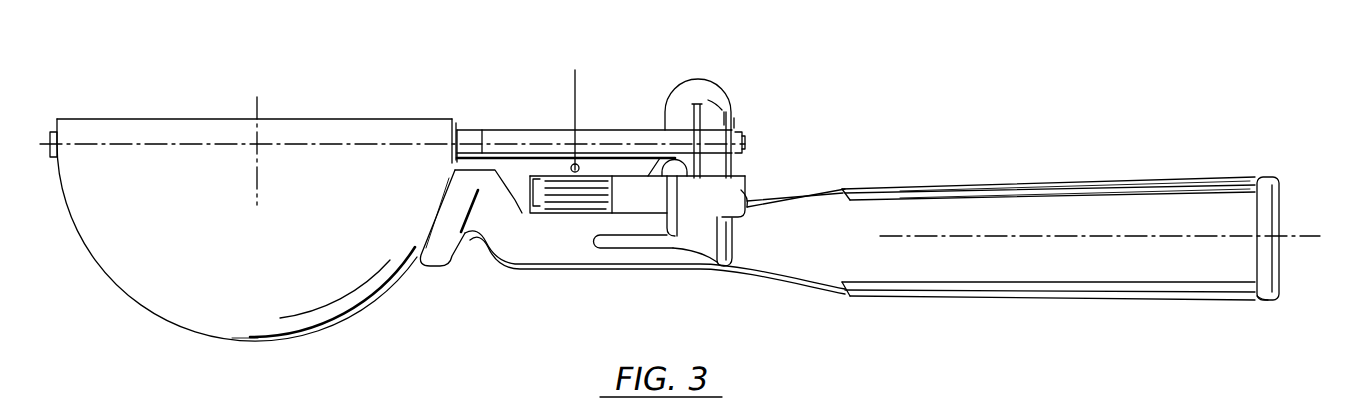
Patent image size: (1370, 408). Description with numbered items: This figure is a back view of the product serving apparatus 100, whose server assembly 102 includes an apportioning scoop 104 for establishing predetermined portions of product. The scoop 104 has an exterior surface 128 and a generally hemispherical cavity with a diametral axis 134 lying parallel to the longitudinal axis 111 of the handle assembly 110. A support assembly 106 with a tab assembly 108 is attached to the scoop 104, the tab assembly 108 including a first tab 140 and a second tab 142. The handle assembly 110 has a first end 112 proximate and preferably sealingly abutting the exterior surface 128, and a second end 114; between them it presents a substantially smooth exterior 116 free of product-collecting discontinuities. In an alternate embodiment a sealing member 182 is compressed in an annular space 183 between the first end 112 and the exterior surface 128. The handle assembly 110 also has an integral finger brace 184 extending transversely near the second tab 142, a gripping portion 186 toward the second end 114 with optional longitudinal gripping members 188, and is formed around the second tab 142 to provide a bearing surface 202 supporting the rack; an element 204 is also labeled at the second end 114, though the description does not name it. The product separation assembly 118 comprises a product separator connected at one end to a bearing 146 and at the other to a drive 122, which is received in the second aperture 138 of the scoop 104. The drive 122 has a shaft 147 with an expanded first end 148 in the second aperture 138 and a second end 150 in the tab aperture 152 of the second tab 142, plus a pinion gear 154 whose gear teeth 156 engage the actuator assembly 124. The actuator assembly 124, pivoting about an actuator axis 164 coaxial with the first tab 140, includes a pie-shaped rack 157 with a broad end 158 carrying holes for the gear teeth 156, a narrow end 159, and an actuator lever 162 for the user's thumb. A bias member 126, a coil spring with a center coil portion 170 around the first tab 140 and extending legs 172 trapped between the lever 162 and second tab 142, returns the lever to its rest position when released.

The product serving apparatus 100 is at (940, 116).
The server assembly 102 is at (109, 272).
The apportioning scoop 104 is at (110, 118).
The support assembly 106 is at (747, 167).
The tab assembly 108 is at (737, 123).
The handle assembly 110 is at (1103, 299).
The longitudinal axis 111 is at (1305, 236).
The first end 112 is at (438, 263).
The second end 114 is at (1258, 300).
The smooth exterior 116 is at (1150, 205).
The product separation assembly 118 is at (762, 153).
The drive 122 is at (498, 132).
The actuator assembly 124 is at (672, 103).
The bias member 126 is at (575, 214).
The exterior surface 128 is at (178, 315).
The diametral axis 134 is at (160, 145).
The second aperture 138 is at (455, 118).
The first tab 140 is at (573, 164).
The second tab 142 is at (735, 120).
The bearing 146 is at (52, 132).
The shaft 147 is at (595, 130).
The first end 148 is at (467, 128).
The second end 150 is at (742, 142).
The tab aperture 152 is at (739, 132).
The pinion gear 154 is at (713, 103).
The gear teeth 156 is at (721, 105).
The pie-shaped rack 157 is at (742, 179).
The broad end 158 is at (673, 192).
The narrow end 159 is at (528, 180).
The actuator lever 162 is at (692, 100).
The actuator axis 164 is at (610, 57).
The center coil portion 170 is at (548, 214).
The extending legs 172 is at (655, 210).
The sealing member 182 is at (391, 262).
The annular space 183 is at (420, 255).
The integral finger brace 184 is at (740, 267).
The gripping portion 186 is at (1058, 196).
The longitudinal gripping members 188 is at (975, 192).
The bearing surface 202 is at (671, 178).
The end cap 204 is at (1273, 178).